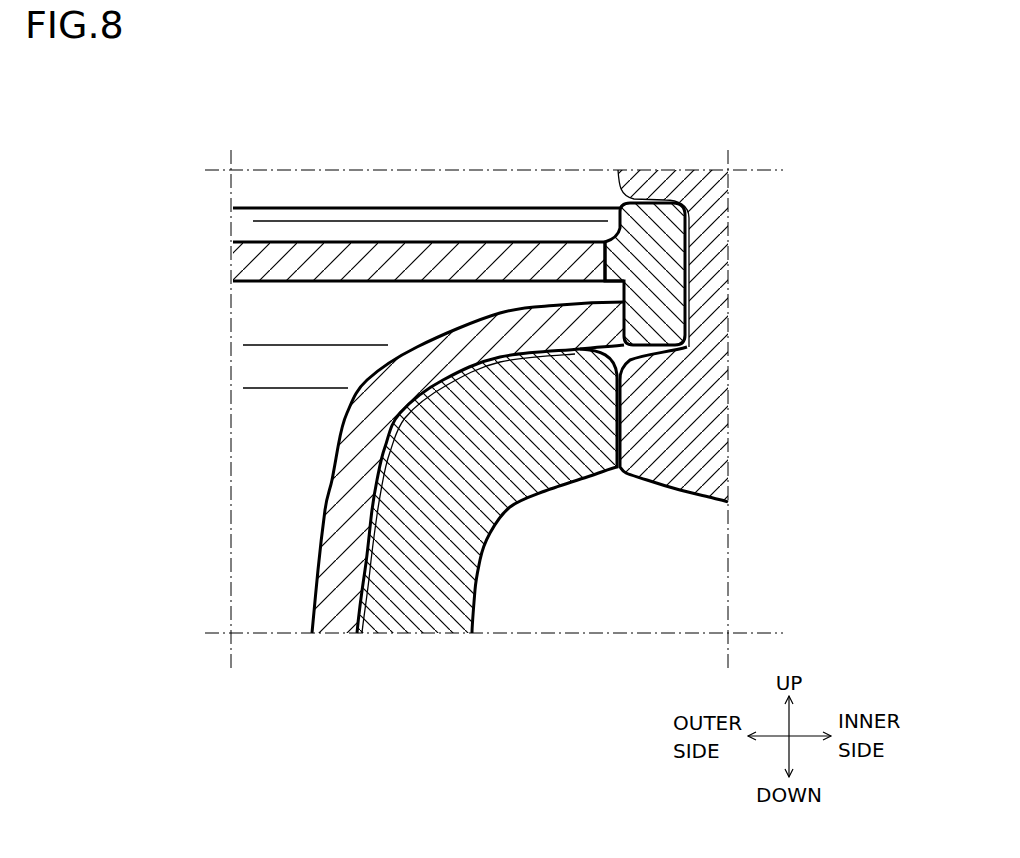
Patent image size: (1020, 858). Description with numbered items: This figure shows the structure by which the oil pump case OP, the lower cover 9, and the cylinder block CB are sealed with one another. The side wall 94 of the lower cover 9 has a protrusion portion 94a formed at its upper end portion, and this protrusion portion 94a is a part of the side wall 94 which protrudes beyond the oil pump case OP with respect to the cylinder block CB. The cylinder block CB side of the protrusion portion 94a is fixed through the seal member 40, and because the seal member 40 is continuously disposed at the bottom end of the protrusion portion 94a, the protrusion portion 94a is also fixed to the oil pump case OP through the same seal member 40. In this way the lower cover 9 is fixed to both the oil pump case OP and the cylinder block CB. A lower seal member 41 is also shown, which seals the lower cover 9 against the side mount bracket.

The lower cover 9 is at (302, 208).
The lower seal member 41 is at (433, 256).
The protrusion portion 94a is at (533, 229).
The side wall 94 is at (267, 433).
The seal member 40 is at (338, 467).
The cylinder block CB is at (712, 317).
The oil pump case OP is at (463, 568).